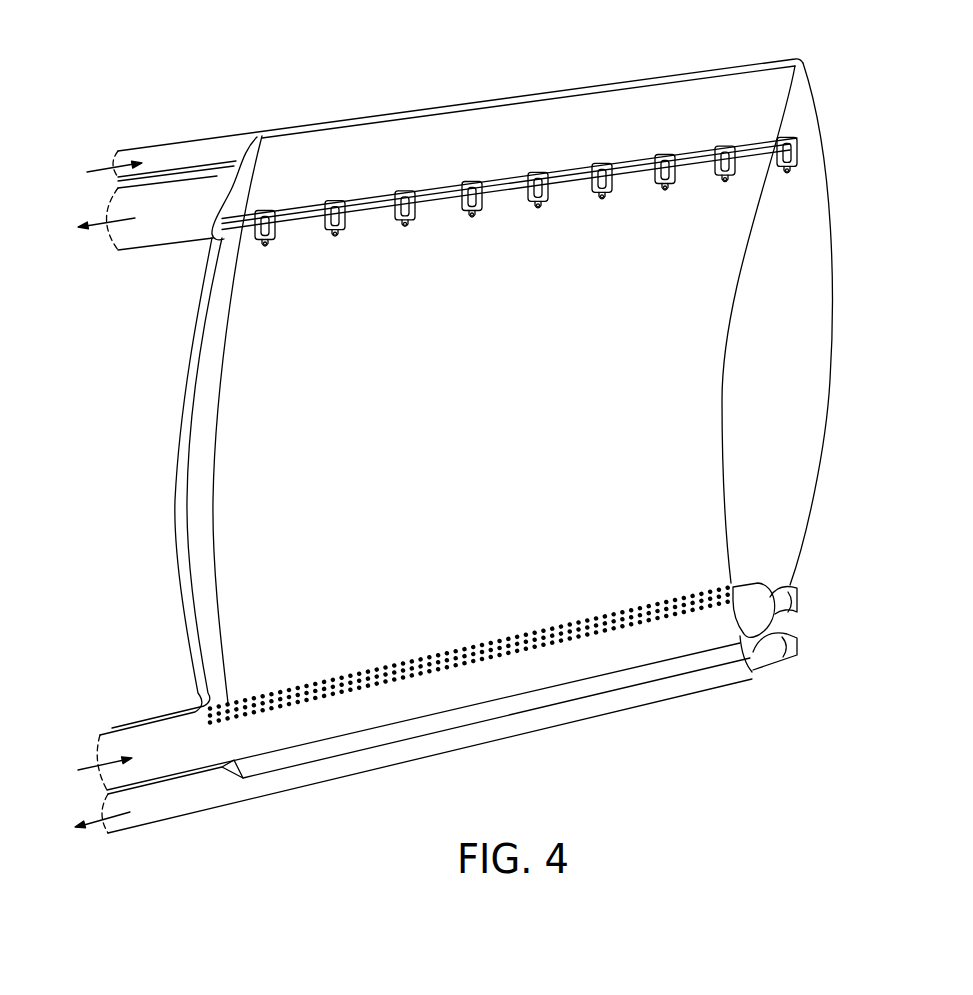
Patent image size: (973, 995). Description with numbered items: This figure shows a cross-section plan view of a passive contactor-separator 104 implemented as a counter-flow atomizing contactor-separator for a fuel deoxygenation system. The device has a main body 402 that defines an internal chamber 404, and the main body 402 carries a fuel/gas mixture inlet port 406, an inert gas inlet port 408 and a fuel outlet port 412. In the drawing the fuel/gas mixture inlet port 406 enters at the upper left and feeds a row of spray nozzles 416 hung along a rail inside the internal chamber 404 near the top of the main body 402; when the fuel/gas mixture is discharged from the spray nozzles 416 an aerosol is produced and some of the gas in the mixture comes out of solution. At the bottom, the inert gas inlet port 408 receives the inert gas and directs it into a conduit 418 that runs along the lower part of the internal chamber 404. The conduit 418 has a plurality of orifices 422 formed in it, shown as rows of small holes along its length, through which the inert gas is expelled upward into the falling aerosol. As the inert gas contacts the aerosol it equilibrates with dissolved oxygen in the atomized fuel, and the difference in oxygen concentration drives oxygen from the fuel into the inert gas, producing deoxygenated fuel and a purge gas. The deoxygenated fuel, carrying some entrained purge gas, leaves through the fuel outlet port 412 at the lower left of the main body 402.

The contactor-separator 104 is at (880, 195).
The main body 402 is at (484, 99).
The internal chamber 404 is at (779, 352).
The fuel/gas mixture inlet port 406 is at (116, 156).
The inert gas inlet port 408 is at (99, 740).
The fuel outlet port 412 is at (100, 800).
The spray nozzles 416 is at (268, 249).
The conduit 418 is at (117, 238).
The orifices 422 is at (422, 657).